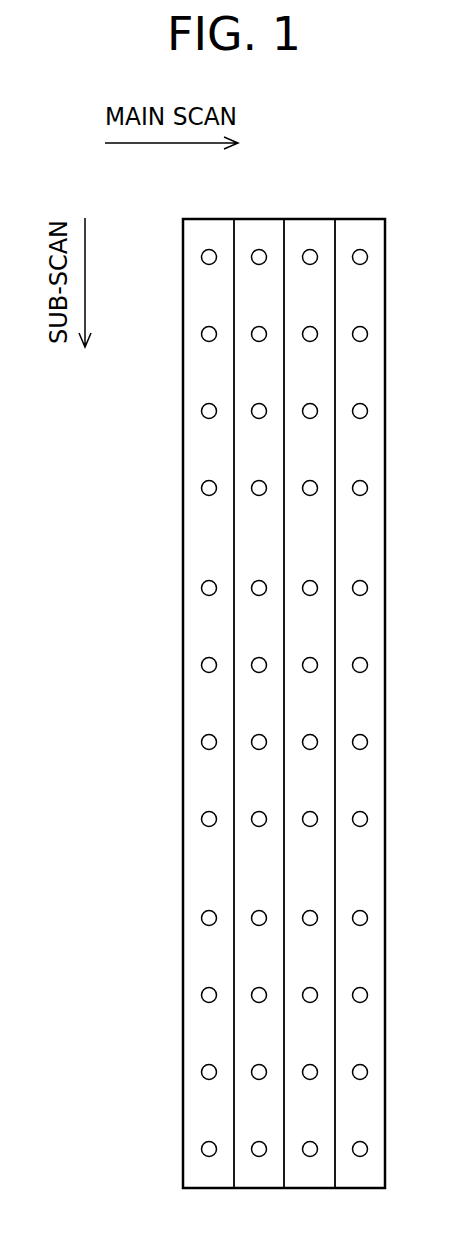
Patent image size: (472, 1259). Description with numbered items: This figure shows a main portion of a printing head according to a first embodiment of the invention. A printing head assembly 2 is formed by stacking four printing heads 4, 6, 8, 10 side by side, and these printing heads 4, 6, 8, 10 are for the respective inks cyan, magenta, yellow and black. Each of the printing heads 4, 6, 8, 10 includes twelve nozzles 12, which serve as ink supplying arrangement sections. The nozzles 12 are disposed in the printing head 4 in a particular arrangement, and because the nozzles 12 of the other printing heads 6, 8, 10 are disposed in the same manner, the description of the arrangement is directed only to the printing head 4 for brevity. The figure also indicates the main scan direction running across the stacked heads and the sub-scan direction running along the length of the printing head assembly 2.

The printing head assembly 2 is at (392, 186).
The printing head 4 is at (209, 230).
The printing head 6 is at (260, 230).
The printing head 8 is at (310, 230).
The printing head 10 is at (361, 230).
The nozzle 12 is at (201, 256).